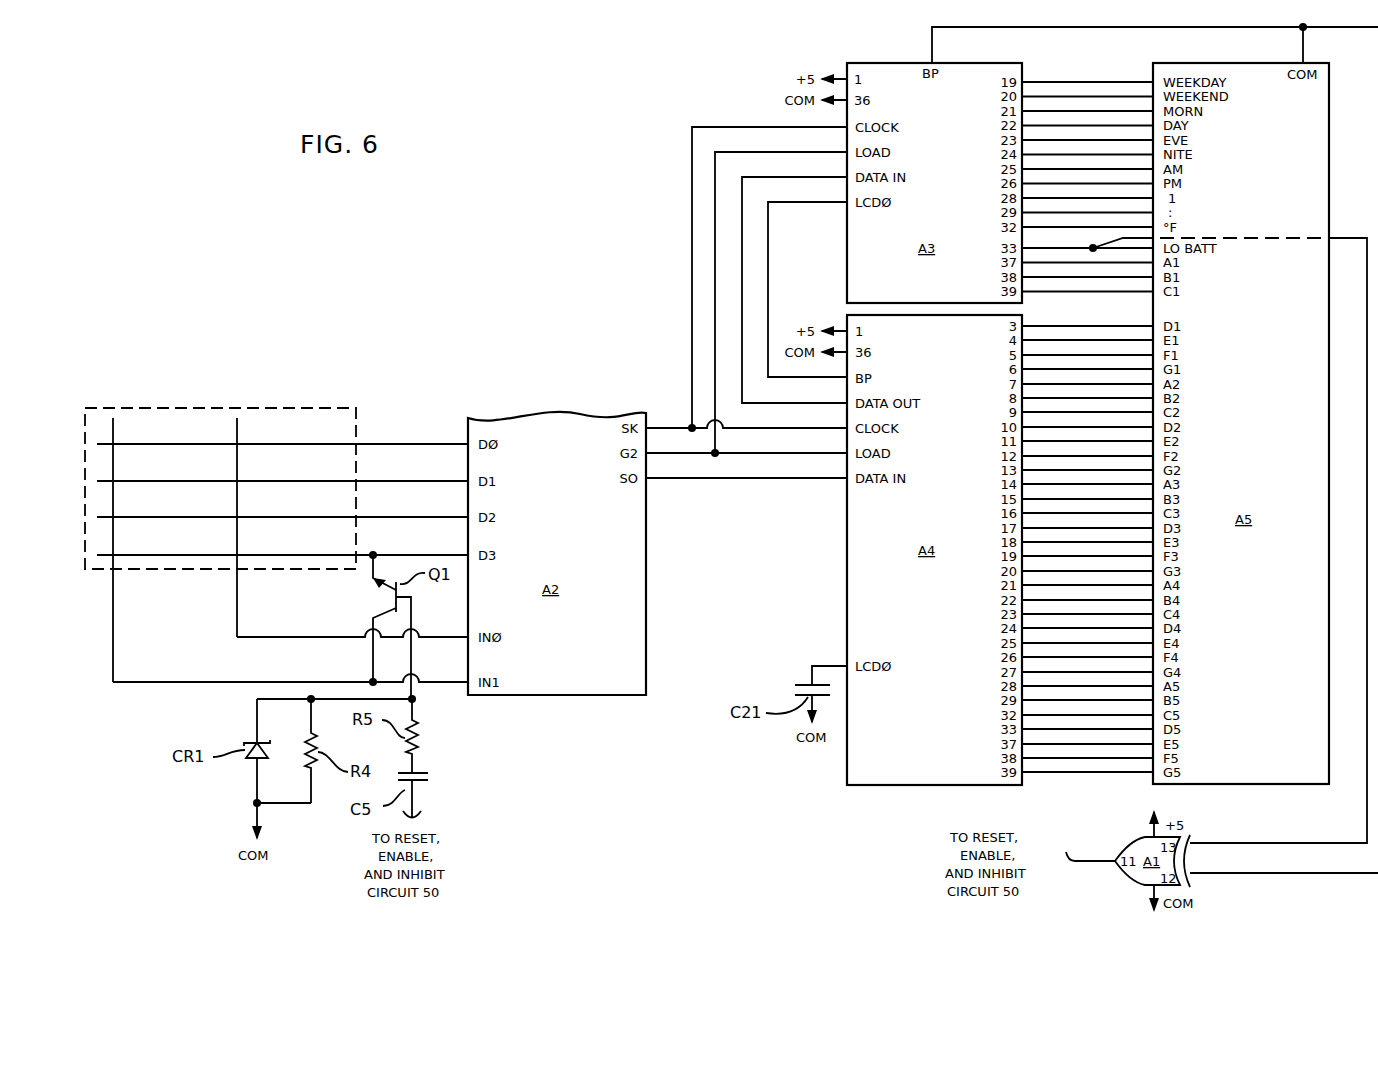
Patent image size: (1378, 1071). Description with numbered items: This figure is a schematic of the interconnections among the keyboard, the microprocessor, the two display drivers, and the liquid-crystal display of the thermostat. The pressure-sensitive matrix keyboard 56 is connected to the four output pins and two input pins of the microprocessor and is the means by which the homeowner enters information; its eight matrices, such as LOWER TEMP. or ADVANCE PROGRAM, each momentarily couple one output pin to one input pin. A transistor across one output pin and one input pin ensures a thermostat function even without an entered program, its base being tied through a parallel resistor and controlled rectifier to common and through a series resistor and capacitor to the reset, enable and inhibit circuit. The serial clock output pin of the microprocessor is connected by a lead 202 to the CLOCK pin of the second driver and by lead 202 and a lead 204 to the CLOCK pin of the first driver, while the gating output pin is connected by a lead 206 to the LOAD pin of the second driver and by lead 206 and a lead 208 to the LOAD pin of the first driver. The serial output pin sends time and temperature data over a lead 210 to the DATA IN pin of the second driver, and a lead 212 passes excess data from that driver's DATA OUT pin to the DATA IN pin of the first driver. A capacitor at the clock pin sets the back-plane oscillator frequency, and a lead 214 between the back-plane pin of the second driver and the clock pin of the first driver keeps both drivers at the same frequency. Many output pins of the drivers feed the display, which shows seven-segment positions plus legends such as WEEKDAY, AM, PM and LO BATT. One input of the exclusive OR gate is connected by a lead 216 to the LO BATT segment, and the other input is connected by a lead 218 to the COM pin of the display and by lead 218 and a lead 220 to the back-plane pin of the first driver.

The pressure-sensitive matrix keyboard 56 is at (228, 408).
The lead 202 is at (668, 426).
The lead 204 is at (690, 268).
The lead 206 is at (658, 453).
The lead 208 is at (717, 447).
The lead 210 is at (658, 478).
The lead 212 is at (744, 380).
The lead 214 is at (770, 268).
The lead 216 is at (1270, 843).
The lead 218 is at (1272, 873).
The lead 220 is at (1103, 30).